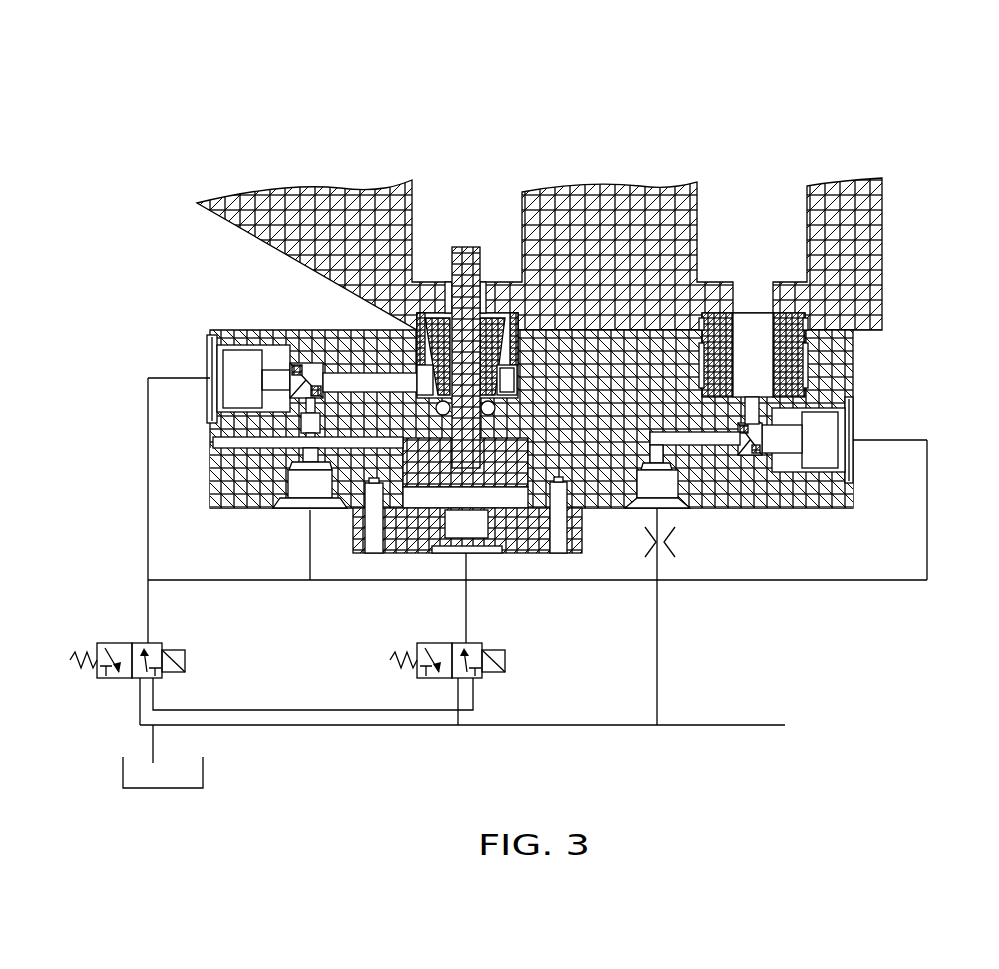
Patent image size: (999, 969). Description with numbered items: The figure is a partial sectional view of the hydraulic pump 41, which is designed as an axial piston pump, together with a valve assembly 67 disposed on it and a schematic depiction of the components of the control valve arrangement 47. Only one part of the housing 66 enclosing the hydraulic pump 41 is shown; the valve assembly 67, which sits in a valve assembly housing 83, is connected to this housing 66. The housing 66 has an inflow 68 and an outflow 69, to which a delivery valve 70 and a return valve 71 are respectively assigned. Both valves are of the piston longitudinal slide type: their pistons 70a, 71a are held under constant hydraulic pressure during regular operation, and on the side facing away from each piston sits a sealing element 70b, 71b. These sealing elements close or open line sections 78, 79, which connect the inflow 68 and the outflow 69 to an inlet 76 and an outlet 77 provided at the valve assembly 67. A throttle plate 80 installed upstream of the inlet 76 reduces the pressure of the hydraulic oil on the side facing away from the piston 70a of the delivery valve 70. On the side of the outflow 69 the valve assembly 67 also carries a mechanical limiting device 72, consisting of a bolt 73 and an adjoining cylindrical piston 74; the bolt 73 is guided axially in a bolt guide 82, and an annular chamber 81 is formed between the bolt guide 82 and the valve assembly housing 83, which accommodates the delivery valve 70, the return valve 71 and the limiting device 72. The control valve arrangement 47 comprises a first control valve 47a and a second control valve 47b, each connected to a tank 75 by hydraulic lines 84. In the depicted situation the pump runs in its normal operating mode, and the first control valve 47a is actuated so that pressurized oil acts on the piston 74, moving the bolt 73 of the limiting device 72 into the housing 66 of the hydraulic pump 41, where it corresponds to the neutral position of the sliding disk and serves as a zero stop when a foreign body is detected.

The hydraulic pump 41 is at (877, 145).
The control valve arrangement 47 is at (493, 583).
The first control valve 47a is at (478, 645).
The second control valve 47b is at (160, 647).
The housing 66 is at (862, 240).
The valve assembly 67 is at (210, 482).
The inflow 68 is at (752, 296).
The outflow 69 is at (447, 322).
The delivery valve 70 is at (817, 414).
The piston of delivery valve 70a is at (828, 447).
The sealing element 70b is at (742, 432).
The return valve 71 is at (259, 359).
The piston of return valve 71a is at (235, 390).
The sealing element 71b is at (323, 382).
The limiting device 72 is at (506, 402).
The bolt 73 is at (467, 265).
The cylindrical piston 74 is at (508, 450).
The tank 75 is at (123, 775).
The inlet 76 is at (633, 510).
The outlet 77 is at (290, 510).
The line section 78 is at (705, 452).
The line section 79 is at (300, 418).
The throttle plate 80 is at (668, 542).
The annular chamber 81 is at (497, 343).
The bolt guide 82 is at (494, 378).
The valve assembly housing 83 is at (812, 490).
The hydraulic lines 84 is at (156, 695).